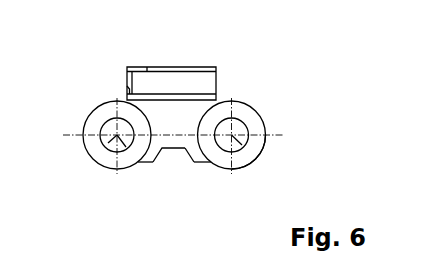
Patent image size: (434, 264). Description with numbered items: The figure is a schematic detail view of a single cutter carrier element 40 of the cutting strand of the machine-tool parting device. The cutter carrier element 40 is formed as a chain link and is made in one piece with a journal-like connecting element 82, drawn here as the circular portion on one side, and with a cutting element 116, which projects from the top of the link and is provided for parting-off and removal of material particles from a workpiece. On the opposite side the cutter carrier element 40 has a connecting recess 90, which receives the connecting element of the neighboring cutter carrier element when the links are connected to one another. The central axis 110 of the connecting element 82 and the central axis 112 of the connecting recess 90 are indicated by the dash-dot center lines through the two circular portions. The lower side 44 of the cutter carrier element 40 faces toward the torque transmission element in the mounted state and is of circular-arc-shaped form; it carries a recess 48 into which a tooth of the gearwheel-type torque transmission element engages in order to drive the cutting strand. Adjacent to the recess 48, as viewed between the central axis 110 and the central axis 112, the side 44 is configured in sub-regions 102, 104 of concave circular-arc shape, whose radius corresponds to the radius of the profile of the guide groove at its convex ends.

The cutting element 116 is at (188, 67).
The cutter carrier element 40 is at (243, 102).
The connecting recess 90 is at (244, 123).
The central axis of the connecting element 110 is at (93, 147).
The central axis of the connecting recess 112 is at (256, 152).
The connecting element 82 is at (134, 158).
The circular-arc-shaped sub-region 102 is at (146, 166).
The side facing toward the torque transmission element 44 is at (176, 166).
The recess 48 is at (191, 160).
The circular-arc-shaped sub-region 104 is at (207, 166).